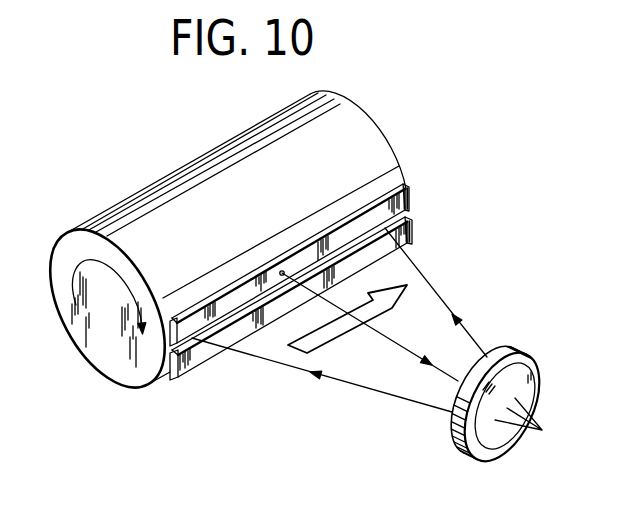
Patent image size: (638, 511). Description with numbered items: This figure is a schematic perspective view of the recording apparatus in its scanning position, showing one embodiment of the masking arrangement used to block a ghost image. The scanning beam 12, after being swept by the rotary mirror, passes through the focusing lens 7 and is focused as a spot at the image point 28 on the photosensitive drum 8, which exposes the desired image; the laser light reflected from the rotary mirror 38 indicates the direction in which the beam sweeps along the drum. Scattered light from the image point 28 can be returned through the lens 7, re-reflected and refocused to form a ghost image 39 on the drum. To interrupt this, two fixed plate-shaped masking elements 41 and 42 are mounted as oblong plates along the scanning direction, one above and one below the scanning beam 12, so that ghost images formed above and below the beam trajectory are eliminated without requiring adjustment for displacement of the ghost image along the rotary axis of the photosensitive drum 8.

The photosensitive drum 8 is at (349, 128).
The fixed plate-shaped masking element 41 is at (410, 193).
The fixed plate-shaped masking element 42 is at (410, 231).
The ghost image 39 is at (282, 272).
The laser light reflected from the rotary mirror 38 is at (380, 332).
The focusing lens 7 is at (518, 350).
The image point 28 is at (192, 343).
The scanning beam 12 is at (338, 378).